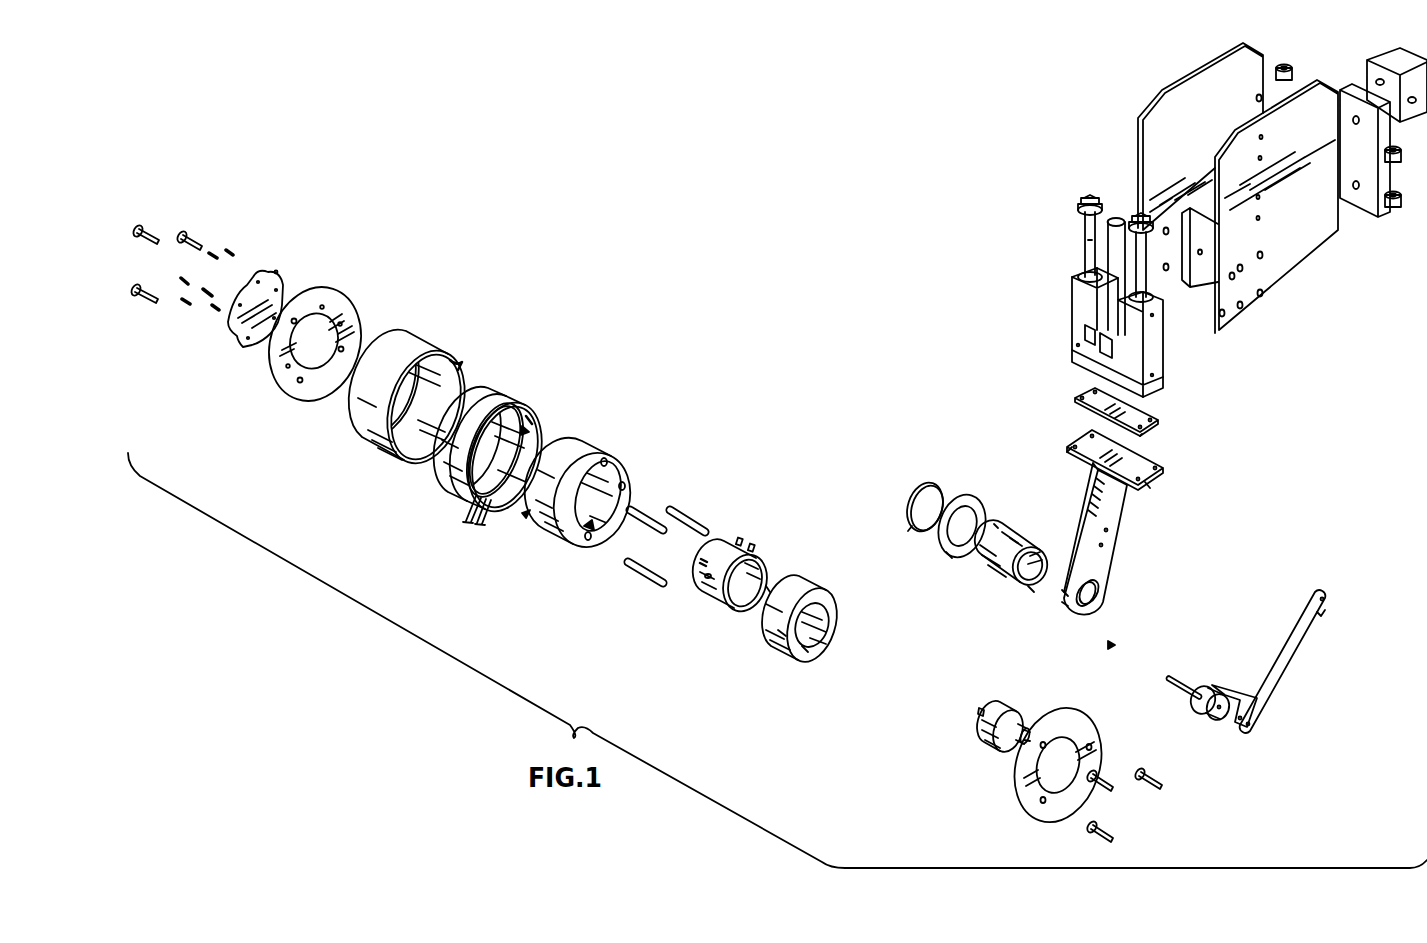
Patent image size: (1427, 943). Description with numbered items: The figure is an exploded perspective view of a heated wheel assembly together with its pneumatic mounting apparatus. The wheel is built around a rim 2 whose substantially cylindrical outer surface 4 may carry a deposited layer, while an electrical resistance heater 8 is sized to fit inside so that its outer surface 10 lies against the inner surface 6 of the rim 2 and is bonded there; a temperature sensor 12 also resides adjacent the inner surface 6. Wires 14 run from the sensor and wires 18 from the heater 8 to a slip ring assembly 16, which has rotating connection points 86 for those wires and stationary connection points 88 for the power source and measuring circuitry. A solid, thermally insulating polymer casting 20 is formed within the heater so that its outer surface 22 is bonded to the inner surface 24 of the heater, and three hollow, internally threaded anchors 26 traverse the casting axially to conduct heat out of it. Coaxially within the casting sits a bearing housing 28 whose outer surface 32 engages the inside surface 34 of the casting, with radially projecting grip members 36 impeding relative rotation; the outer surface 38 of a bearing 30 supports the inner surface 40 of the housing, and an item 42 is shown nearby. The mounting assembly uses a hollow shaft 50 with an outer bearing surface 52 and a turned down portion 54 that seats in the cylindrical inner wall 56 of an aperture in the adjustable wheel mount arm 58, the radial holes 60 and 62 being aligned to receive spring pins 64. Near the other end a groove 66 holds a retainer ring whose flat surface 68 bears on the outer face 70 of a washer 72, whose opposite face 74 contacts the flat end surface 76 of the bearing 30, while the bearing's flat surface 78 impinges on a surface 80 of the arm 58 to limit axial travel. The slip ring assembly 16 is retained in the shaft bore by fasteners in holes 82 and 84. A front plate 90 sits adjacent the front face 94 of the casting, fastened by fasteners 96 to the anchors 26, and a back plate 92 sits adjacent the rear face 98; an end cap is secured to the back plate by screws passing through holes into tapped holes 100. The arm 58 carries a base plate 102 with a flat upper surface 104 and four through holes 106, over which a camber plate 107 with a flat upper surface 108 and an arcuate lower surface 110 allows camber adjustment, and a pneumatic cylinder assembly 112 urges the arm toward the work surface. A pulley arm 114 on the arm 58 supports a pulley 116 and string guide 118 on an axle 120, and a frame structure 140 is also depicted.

The rim 2 is at (348, 438).
The outer surface 4 is at (410, 332).
The inner surface 6 is at (456, 366).
The electrical resistance heater 8 is at (456, 482).
The outer surface 10 is at (502, 396).
The temperature sensor 12 is at (448, 448).
The wires 14 is at (540, 430).
The slip ring assembly 16 is at (982, 745).
The wires 18 is at (470, 515).
The polymer casting 20 is at (548, 535).
The outer surface 22 is at (592, 444).
The inner surface 24 is at (533, 416).
The anchors 26 is at (645, 578).
The bearing housing 28 is at (708, 598).
The bearing 30 is at (780, 636).
The outer surface 32 is at (718, 540).
The inside surface 34 is at (586, 526).
The grip members 36 is at (750, 536).
The outer surface 38 is at (806, 594).
The inner surface 40 is at (768, 585).
The bushing bore 42 is at (814, 636).
The hollow shaft 50 is at (994, 572).
The outer bearing surface 52 is at (1008, 525).
The turned down portion 54 is at (1030, 588).
The cylindrical inner wall 56 is at (1097, 598).
The wheel mount arm 58 is at (1110, 545).
The radial holes 60 is at (1040, 548).
The radial holes 62 is at (914, 530).
The spring pins 64 is at (1110, 644).
The groove 66 is at (996, 522).
The flat surface 68 is at (918, 484).
The outer face 70 is at (954, 496).
The washer 72 is at (948, 556).
The opposite face 74 is at (970, 506).
The flat end surface 76 is at (752, 612).
The flat surface 78 is at (804, 650).
The surface 80 is at (1060, 588).
The hole 82 is at (1018, 538).
The hole 84 is at (1040, 565).
The rotating connection points 86 is at (976, 714).
The stationary connection points 88 is at (1008, 750).
The front plate 90 is at (1040, 812).
The back plate 92 is at (340, 288).
The front face 94 is at (276, 272).
The fasteners 96 is at (226, 254).
The rear face 98 is at (258, 275).
The tapped holes 100 is at (338, 316).
The base plate 102 is at (1150, 488).
The upper surface 104 is at (1158, 454).
The through holes 106 is at (1072, 447).
The camber plate 107 is at (1142, 434).
The flat upper surface 108 is at (1150, 415).
The arcuate lower surface 110 is at (1075, 400).
The pneumatic cylinder assembly 112 is at (1095, 240).
The pulley arm 114 is at (1298, 686).
The pulley 116 is at (1208, 722).
The string guide 118 is at (1235, 730).
The axle 120 is at (1188, 680).
The frame bracket 140 is at (1138, 140).